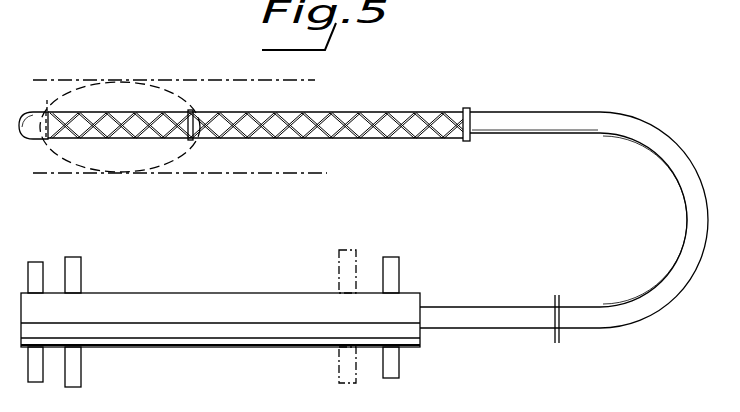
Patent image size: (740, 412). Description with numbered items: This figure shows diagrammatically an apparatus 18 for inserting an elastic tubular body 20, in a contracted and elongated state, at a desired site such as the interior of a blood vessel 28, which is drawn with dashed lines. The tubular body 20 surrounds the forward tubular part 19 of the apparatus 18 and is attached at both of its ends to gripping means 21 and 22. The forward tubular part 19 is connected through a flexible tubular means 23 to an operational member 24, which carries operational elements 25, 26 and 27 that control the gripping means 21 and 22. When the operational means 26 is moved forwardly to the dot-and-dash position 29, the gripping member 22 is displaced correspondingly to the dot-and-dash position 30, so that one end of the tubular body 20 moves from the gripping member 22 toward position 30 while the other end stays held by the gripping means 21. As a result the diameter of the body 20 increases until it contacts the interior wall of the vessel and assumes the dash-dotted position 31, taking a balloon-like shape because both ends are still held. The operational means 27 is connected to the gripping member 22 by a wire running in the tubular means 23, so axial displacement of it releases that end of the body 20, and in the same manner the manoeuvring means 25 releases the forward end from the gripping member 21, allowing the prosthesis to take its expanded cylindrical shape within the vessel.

The apparatus 18 is at (609, 107).
The forward tubular part 19 is at (347, 131).
The tubular body 20 is at (350, 113).
The gripping means 21 is at (44, 142).
The gripping means 22 is at (466, 108).
The flexible tubular means 23 is at (680, 170).
The operational member 24 is at (129, 349).
The manoeuvring means 25 is at (35, 262).
The operational means 26 is at (76, 257).
The operational means 27 is at (388, 257).
The blood vessel 28 is at (124, 82).
The position 29 is at (338, 263).
The position 30 is at (192, 108).
The position 31 is at (48, 100).